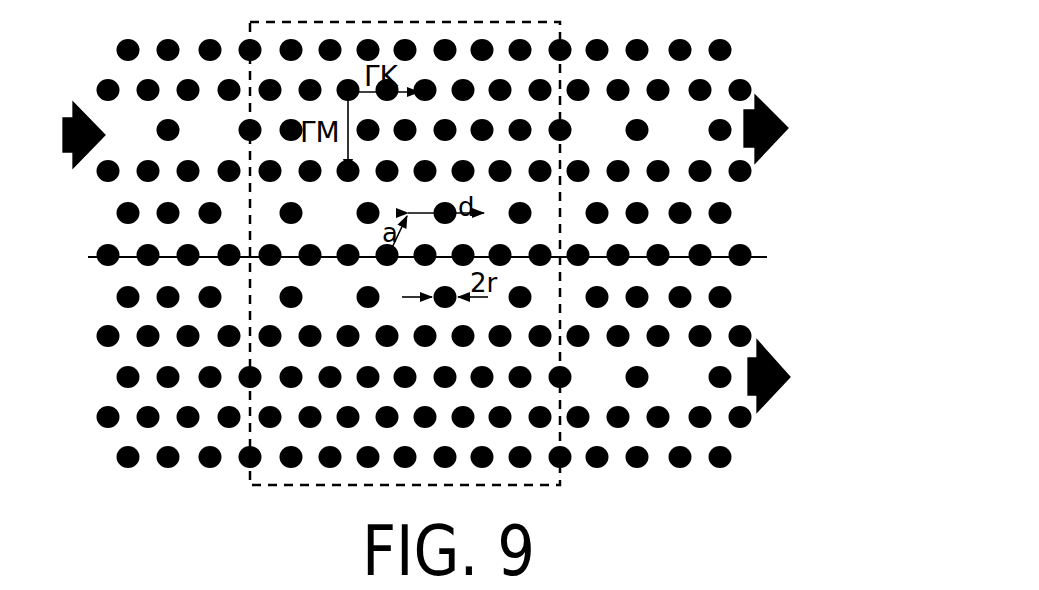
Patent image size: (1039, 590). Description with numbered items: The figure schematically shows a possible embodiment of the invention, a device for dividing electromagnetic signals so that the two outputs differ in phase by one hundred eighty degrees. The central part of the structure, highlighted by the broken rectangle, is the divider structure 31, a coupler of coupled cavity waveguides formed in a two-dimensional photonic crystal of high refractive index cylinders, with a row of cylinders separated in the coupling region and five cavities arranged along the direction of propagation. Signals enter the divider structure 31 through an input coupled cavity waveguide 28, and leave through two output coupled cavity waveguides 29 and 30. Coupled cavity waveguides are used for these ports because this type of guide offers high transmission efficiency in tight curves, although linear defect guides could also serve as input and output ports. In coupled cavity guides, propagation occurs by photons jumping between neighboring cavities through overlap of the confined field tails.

The input coupled cavity waveguide 28 is at (72, 183).
The output coupled cavity waveguide 29 is at (777, 157).
The output coupled cavity waveguide 30 is at (779, 347).
The divider structure 31 is at (243, 299).